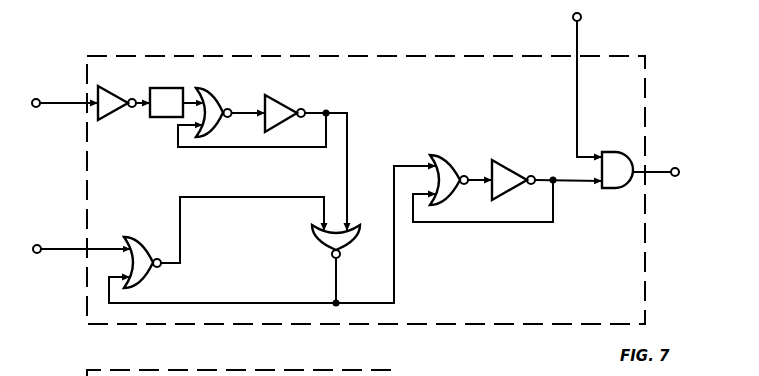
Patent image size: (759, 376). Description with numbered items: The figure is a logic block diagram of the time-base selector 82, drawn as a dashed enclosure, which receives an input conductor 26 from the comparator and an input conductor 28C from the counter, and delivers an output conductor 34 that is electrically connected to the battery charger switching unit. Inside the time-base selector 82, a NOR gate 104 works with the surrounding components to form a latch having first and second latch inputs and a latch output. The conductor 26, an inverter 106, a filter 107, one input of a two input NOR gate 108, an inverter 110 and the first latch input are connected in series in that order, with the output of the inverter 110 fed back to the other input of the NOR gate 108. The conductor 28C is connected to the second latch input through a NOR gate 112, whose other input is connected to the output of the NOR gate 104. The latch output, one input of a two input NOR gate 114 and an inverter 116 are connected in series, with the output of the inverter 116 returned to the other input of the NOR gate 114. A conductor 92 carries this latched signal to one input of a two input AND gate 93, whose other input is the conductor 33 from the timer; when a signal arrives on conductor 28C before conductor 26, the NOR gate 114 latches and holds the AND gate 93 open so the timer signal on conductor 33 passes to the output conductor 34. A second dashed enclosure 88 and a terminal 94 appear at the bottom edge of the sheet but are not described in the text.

The input conductor 26 is at (70, 101).
The input conductor 28C is at (77, 248).
The conductor 33 is at (580, 38).
The output conductor 34 is at (655, 172).
The time-base selector 82 is at (453, 78).
The circuit block (dashed enclosure) 88 is at (331, 370).
The conductor 92 is at (585, 184).
The AND gate 93 is at (608, 155).
The input terminal 94 is at (66, 375).
The NOR gate 104 is at (323, 240).
The inverter 106 is at (105, 89).
The filter 107 is at (160, 89).
The two input NOR gate 108 is at (206, 95).
The inverter 110 is at (281, 108).
The NOR gate 112 is at (136, 249).
The two input NOR gate 114 is at (440, 168).
The inverter 116 is at (505, 170).